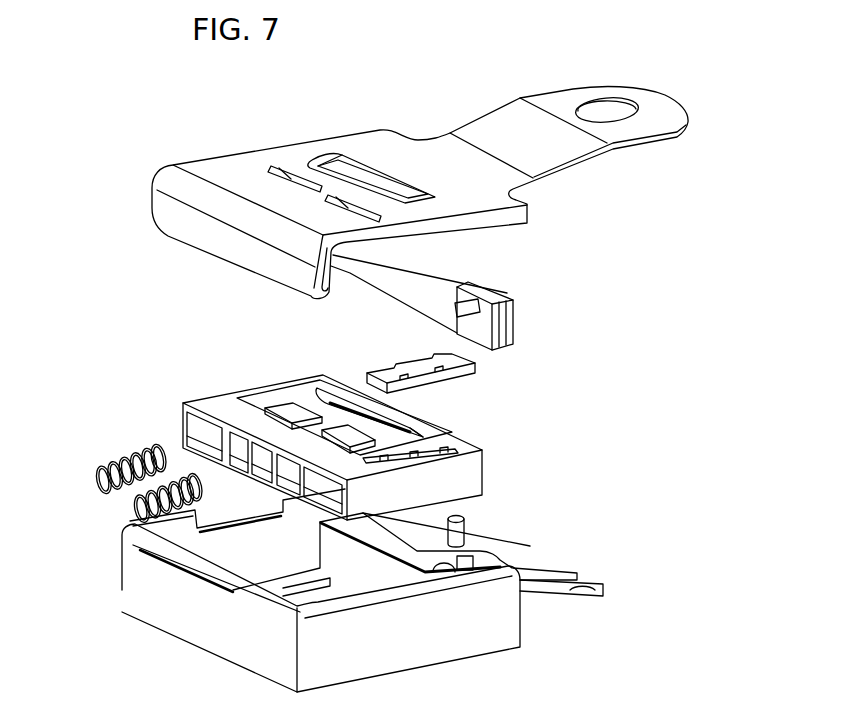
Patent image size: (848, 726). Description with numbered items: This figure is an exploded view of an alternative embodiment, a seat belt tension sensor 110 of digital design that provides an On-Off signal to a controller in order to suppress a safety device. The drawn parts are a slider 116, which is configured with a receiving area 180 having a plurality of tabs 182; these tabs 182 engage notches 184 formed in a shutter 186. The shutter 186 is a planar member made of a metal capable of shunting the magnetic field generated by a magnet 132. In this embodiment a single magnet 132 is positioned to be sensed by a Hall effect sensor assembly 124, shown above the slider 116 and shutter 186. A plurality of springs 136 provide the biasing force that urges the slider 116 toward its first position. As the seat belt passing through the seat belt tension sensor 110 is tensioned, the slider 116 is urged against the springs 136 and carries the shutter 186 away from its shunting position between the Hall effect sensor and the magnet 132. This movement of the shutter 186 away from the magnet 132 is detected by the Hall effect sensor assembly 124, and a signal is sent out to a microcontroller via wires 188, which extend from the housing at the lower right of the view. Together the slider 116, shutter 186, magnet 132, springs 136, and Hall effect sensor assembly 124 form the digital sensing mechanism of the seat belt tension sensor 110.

The seat belt tension sensor 110 is at (727, 133).
The Hall effect sensor assembly 124 is at (498, 278).
The shutter 186 is at (477, 366).
The notches 184 is at (444, 378).
The tabs 182 is at (465, 434).
The receiving area 180 is at (485, 451).
The slider 116 is at (469, 479).
The magnet 132 is at (467, 533).
The springs 136 is at (125, 511).
The wires 188 is at (603, 596).